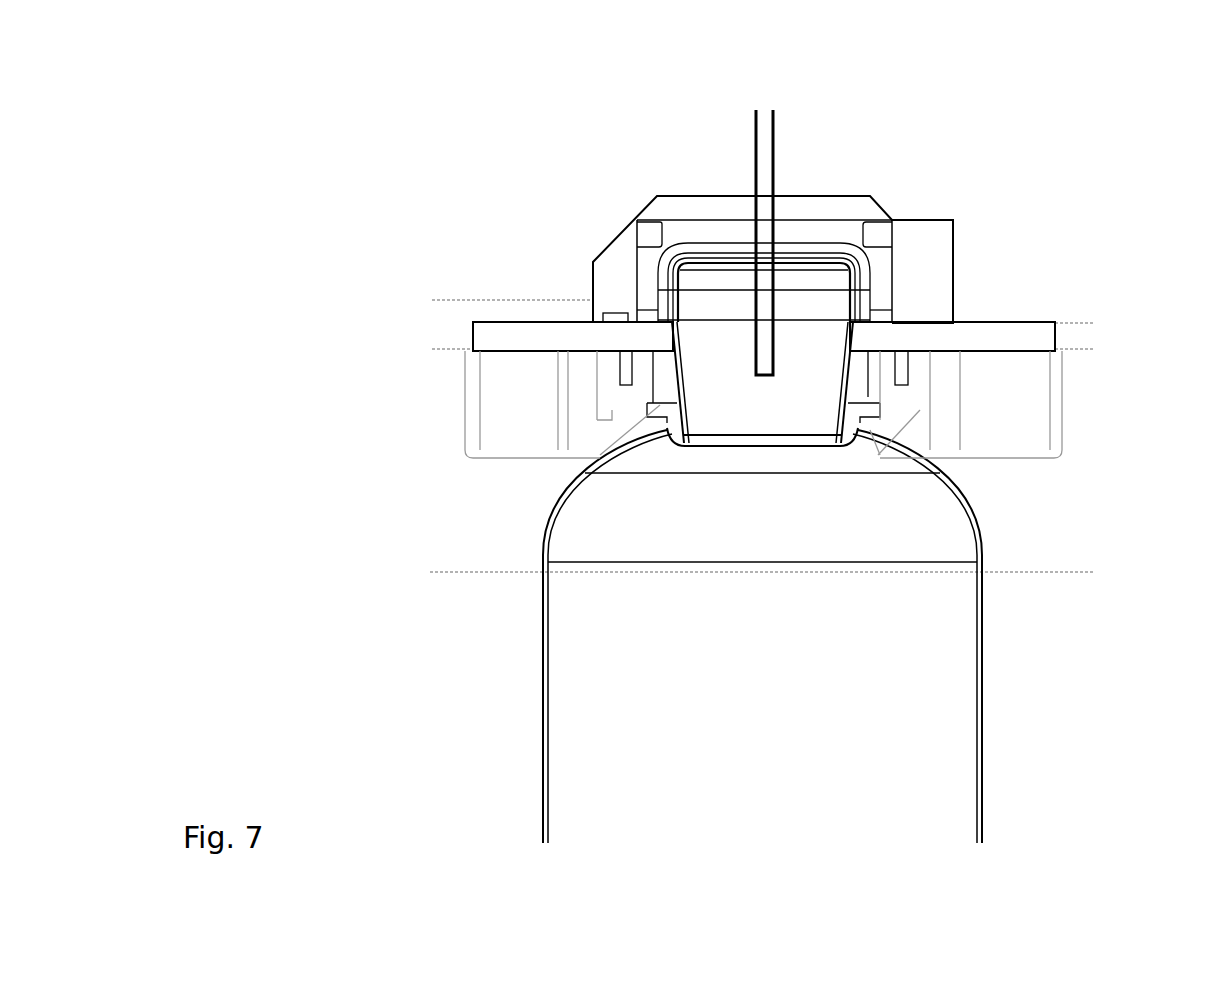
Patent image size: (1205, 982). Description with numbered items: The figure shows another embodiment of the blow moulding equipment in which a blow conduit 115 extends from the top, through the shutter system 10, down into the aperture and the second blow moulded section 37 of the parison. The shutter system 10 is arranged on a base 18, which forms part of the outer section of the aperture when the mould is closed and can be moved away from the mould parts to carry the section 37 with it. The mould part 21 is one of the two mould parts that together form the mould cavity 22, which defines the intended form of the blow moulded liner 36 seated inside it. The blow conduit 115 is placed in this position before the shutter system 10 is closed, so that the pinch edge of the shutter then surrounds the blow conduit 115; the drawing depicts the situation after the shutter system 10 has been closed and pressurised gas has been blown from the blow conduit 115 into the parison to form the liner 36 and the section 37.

The shutter system 10 is at (864, 172).
The base 18 is at (565, 335).
The mould part 21 is at (1042, 432).
The mould cavity 22 is at (495, 384).
The blow moulded liner 36 is at (982, 687).
The second blow moulded section 37 is at (850, 372).
The blow conduit 115 is at (765, 163).